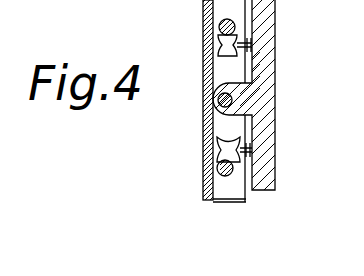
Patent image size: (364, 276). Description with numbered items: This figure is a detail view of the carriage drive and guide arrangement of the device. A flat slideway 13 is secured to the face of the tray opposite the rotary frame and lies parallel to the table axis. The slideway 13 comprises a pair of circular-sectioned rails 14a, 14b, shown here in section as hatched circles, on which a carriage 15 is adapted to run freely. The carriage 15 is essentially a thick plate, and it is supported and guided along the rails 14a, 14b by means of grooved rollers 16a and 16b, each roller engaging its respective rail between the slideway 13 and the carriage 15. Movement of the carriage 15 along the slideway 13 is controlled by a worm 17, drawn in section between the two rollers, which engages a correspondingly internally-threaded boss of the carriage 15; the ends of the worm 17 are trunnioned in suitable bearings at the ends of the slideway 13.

The flat slideway 13 is at (223, 70).
The circular-sectioned rail 14a is at (219, 30).
The circular-sectioned rail 14b is at (225, 175).
The carriage 15 is at (265, 125).
The grooved roller 16a is at (218, 47).
The grooved roller 16b is at (225, 150).
The worm 17 is at (220, 104).